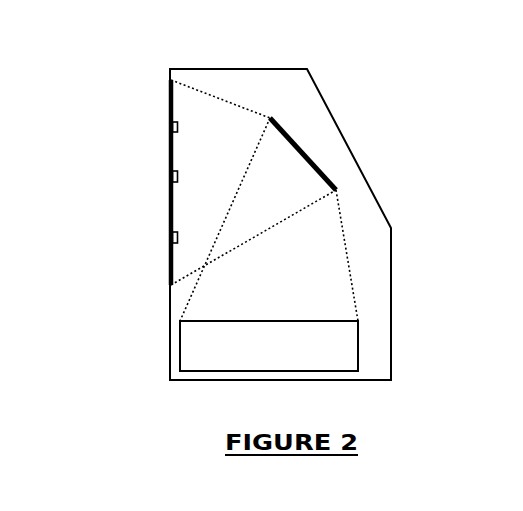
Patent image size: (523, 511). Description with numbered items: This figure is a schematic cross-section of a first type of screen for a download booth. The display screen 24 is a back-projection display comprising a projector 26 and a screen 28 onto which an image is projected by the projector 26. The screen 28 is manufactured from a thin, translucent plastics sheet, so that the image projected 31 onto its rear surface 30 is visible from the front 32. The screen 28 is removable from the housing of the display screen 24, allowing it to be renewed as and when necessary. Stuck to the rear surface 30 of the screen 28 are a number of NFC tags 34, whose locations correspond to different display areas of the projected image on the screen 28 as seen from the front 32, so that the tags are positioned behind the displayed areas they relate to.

The display screen 24 is at (140, 50).
The projector 26 is at (281, 362).
The screen 28 is at (135, 186).
The rear surface 30 is at (182, 107).
The projected image 31 is at (302, 294).
The front 32 is at (100, 186).
The NFC tags 34 is at (172, 127).